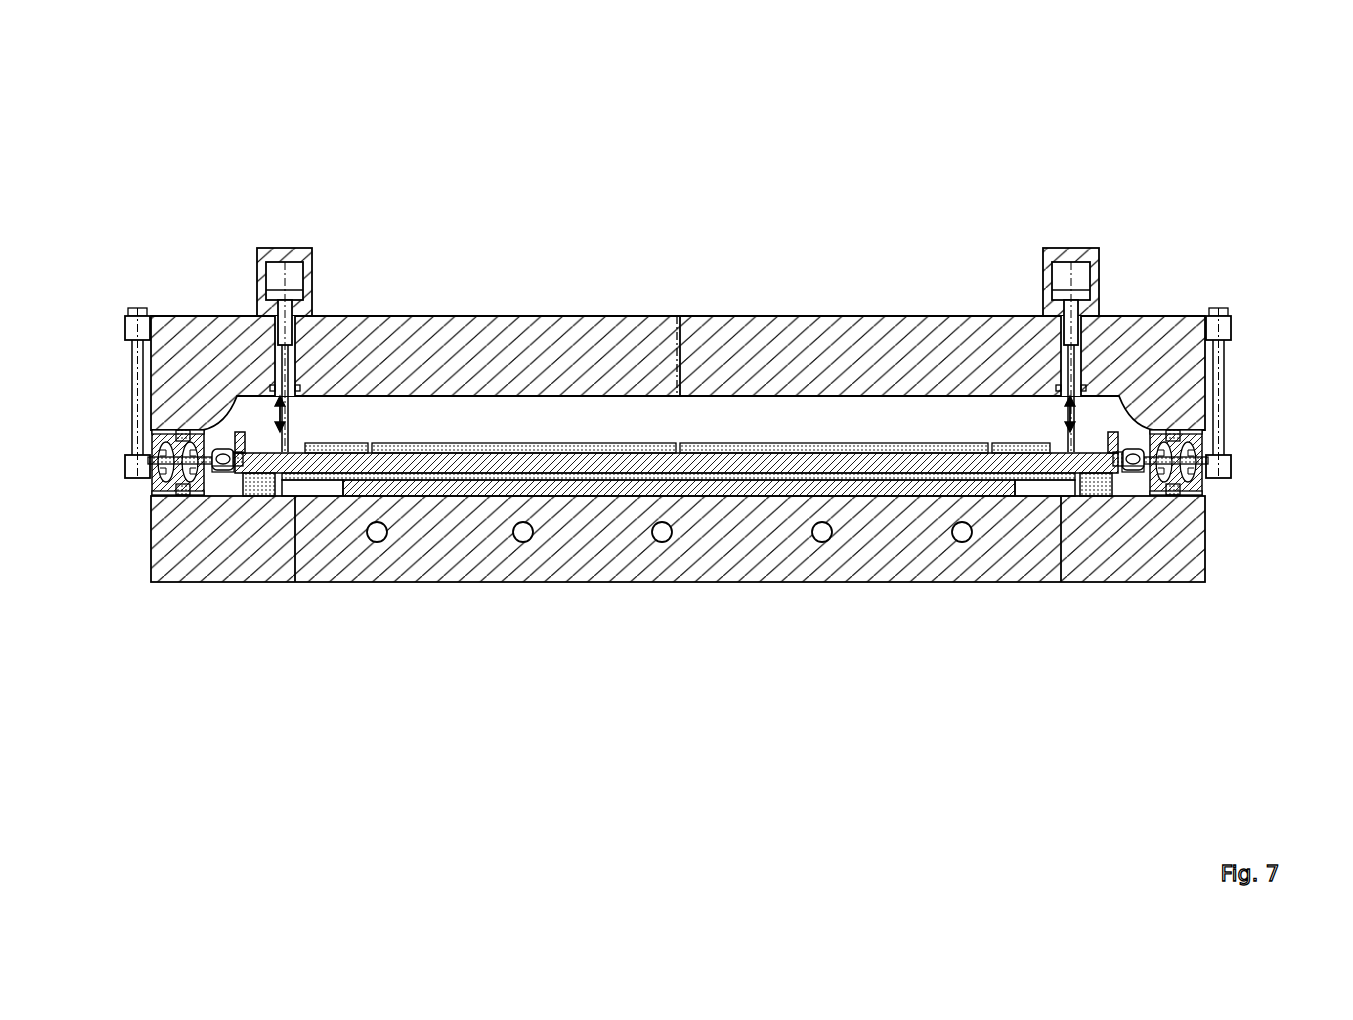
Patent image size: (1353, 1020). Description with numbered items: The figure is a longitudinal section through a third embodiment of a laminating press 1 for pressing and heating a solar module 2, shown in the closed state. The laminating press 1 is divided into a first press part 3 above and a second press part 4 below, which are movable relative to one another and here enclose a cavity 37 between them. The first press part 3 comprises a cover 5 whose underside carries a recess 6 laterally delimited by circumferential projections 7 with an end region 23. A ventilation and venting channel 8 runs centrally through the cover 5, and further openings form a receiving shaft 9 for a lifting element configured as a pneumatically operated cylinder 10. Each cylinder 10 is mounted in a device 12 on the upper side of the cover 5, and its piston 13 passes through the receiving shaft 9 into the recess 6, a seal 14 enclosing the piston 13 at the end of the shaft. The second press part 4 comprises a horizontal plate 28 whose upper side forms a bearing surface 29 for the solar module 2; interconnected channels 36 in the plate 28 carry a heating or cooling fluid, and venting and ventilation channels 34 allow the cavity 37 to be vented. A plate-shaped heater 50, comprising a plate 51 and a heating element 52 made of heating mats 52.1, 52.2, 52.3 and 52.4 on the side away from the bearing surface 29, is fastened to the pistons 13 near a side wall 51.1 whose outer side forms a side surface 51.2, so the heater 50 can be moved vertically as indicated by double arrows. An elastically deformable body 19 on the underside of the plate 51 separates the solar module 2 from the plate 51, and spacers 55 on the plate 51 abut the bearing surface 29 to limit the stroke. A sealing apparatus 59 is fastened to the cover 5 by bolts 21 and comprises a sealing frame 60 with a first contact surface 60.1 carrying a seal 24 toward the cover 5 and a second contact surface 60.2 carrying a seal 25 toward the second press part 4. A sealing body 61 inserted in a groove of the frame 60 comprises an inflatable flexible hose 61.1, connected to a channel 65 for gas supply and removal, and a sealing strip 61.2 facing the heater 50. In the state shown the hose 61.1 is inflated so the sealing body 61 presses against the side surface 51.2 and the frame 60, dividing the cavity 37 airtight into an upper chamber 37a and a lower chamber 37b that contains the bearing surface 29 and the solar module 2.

The laminating press 1 is at (1167, 124).
The solar module 2 is at (470, 530).
The first press part 3 is at (1302, 255).
The second press part 4 is at (827, 590).
The cover 5 is at (460, 345).
The recess 6 is at (715, 395).
The projections 7 is at (165, 405).
The ventilation and venting channel 8 is at (680, 330).
The receiving shaft 9 is at (293, 330).
The cylinder 10 is at (290, 302).
The device 12 is at (287, 240).
The piston 13 is at (292, 358).
The seal 14 is at (1058, 388).
The elastically deformable body 19 is at (745, 488).
The bolts 21 is at (132, 356).
The end region 23 is at (160, 432).
The seal 24 is at (182, 430).
The seal 25 is at (185, 492).
The plate 28 is at (578, 549).
The bearing surface 29 is at (905, 497).
The venting and ventilation channels 34 is at (295, 583).
The channels 36 is at (662, 542).
The cavity 37 is at (800, 425).
The chamber 37a is at (846, 434).
The chamber 37b is at (327, 488).
The heater 50 is at (540, 420).
The plate 51 is at (685, 473).
The side wall 51.1 is at (240, 452).
The side surface 51.2 is at (238, 434).
The heating element 52 is at (603, 432).
The heating mat 52.1 is at (365, 445).
The heating mat 52.2 is at (645, 443).
The heating mat 52.3 is at (720, 443).
The heating mat 52.4 is at (1000, 444).
The spacers 55 is at (258, 492).
The sealing apparatus 59 is at (136, 493).
The sealing frame 60 is at (160, 493).
The first contact surface 60.1 is at (1196, 430).
The second contact surface 60.2 is at (1210, 497).
The sealing body 61 is at (234, 486).
The flexible hose 61.1 is at (222, 484).
The sealing strip 61.2 is at (238, 458).
The venting and ventilation channel 65 is at (178, 495).